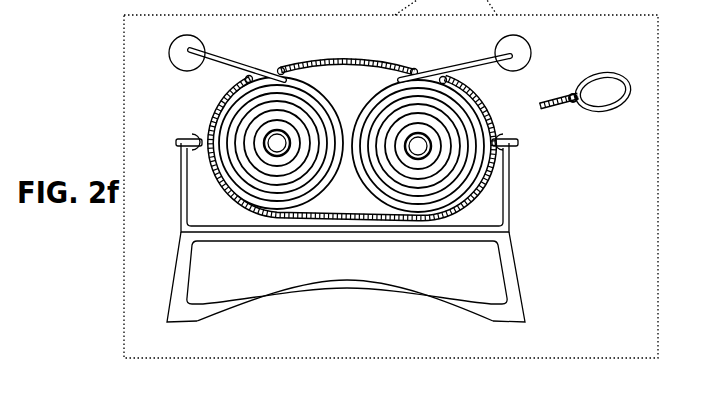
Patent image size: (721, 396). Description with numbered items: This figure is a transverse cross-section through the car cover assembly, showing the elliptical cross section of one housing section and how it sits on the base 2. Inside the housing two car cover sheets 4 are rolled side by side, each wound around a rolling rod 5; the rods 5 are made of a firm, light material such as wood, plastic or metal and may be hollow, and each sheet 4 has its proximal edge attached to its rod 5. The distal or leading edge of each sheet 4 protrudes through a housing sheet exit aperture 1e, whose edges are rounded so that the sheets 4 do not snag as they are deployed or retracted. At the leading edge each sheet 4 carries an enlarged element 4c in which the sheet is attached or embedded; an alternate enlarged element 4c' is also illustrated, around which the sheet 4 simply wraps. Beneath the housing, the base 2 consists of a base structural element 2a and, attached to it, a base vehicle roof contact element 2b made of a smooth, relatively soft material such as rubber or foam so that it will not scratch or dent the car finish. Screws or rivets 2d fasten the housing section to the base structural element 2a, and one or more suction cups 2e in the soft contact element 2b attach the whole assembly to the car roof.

The base 2 is at (406, 229).
The base structural element 2a is at (557, 137).
The base vehicle roof contact element 2b is at (385, 277).
The screw or rivet 2d is at (178, 146).
The suction cup 2e is at (460, 314).
The housing sheet exit aperture 1e is at (280, 64).
The car cover sheet 4 is at (218, 50).
The enlarged element 4c is at (348, 45).
The alternate enlarged element 4c' is at (616, 86).
The rolling rod 5 is at (280, 131).